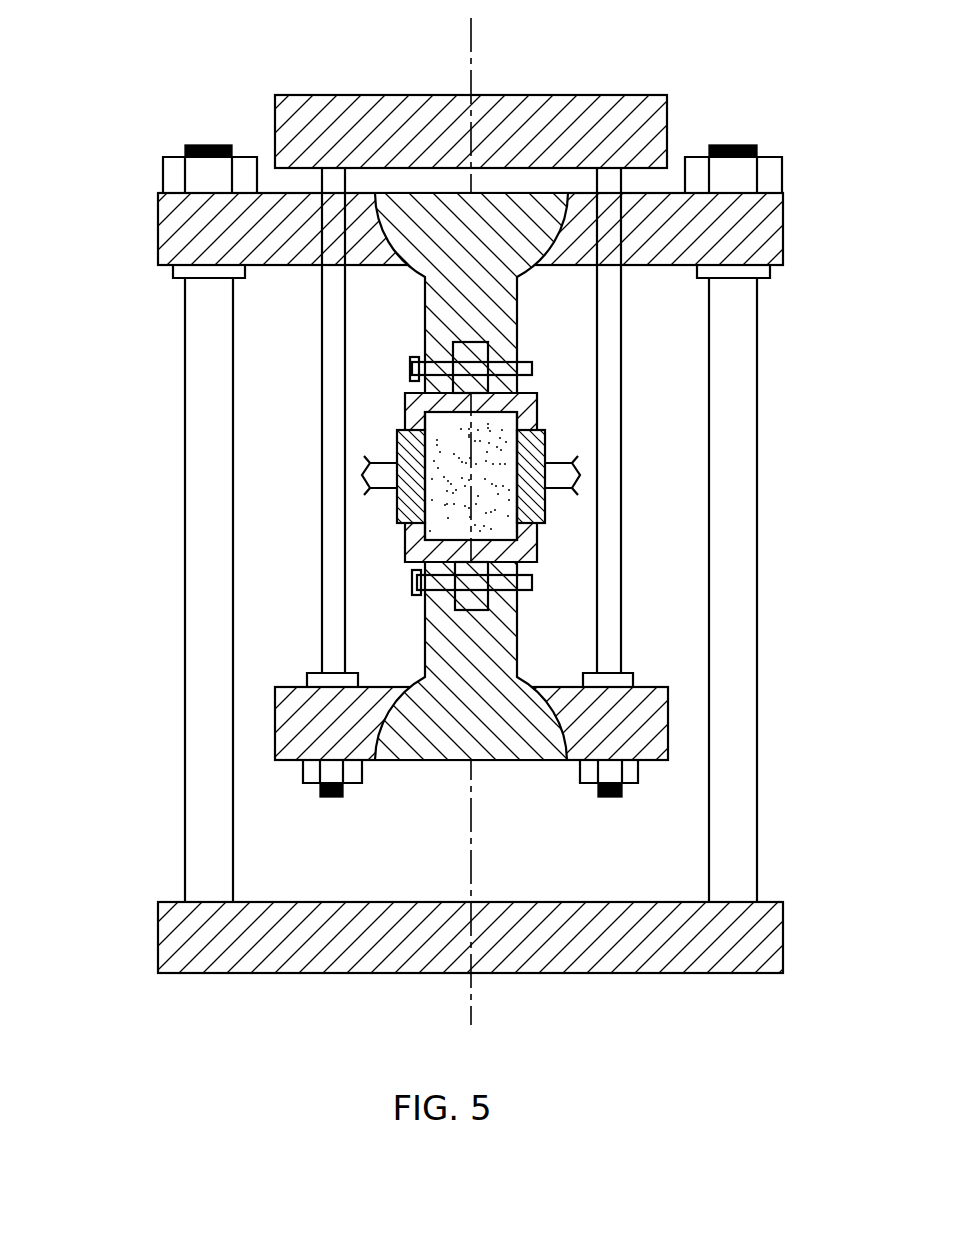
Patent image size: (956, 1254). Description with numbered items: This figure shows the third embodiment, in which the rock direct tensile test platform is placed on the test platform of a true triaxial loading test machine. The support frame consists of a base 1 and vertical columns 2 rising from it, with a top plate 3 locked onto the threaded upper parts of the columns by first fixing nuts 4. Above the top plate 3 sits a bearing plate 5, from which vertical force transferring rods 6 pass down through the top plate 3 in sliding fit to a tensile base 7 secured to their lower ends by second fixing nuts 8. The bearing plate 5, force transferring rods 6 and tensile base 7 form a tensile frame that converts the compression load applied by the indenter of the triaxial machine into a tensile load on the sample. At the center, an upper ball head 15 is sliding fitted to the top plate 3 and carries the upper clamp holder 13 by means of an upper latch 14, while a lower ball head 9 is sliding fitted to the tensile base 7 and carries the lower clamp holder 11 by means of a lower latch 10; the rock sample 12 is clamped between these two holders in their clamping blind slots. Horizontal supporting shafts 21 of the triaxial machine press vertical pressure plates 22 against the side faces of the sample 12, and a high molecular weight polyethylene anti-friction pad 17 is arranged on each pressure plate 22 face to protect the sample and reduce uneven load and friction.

The base 1 is at (212, 942).
The vertical column 2 is at (212, 555).
The top plate 3 is at (180, 237).
The first fixing nut 4 is at (177, 178).
The bearing plate 5 is at (543, 126).
The force transferring rod 6 is at (612, 357).
The tensile base 7 is at (648, 715).
The second fixing nut 8 is at (590, 770).
The lower ball head 9 is at (440, 662).
The lower latch 10 is at (415, 593).
The lower clamp holder 11 is at (413, 553).
The sample 12 is at (440, 525).
The upper clamp holder 13 is at (408, 416).
The upper latch 14 is at (412, 373).
The upper ball head 15 is at (440, 290).
The high molecular weight polyethylene anti-friction pad 17 is at (523, 498).
The supporting shaft 21 is at (557, 477).
The pressure plate 22 is at (533, 440).